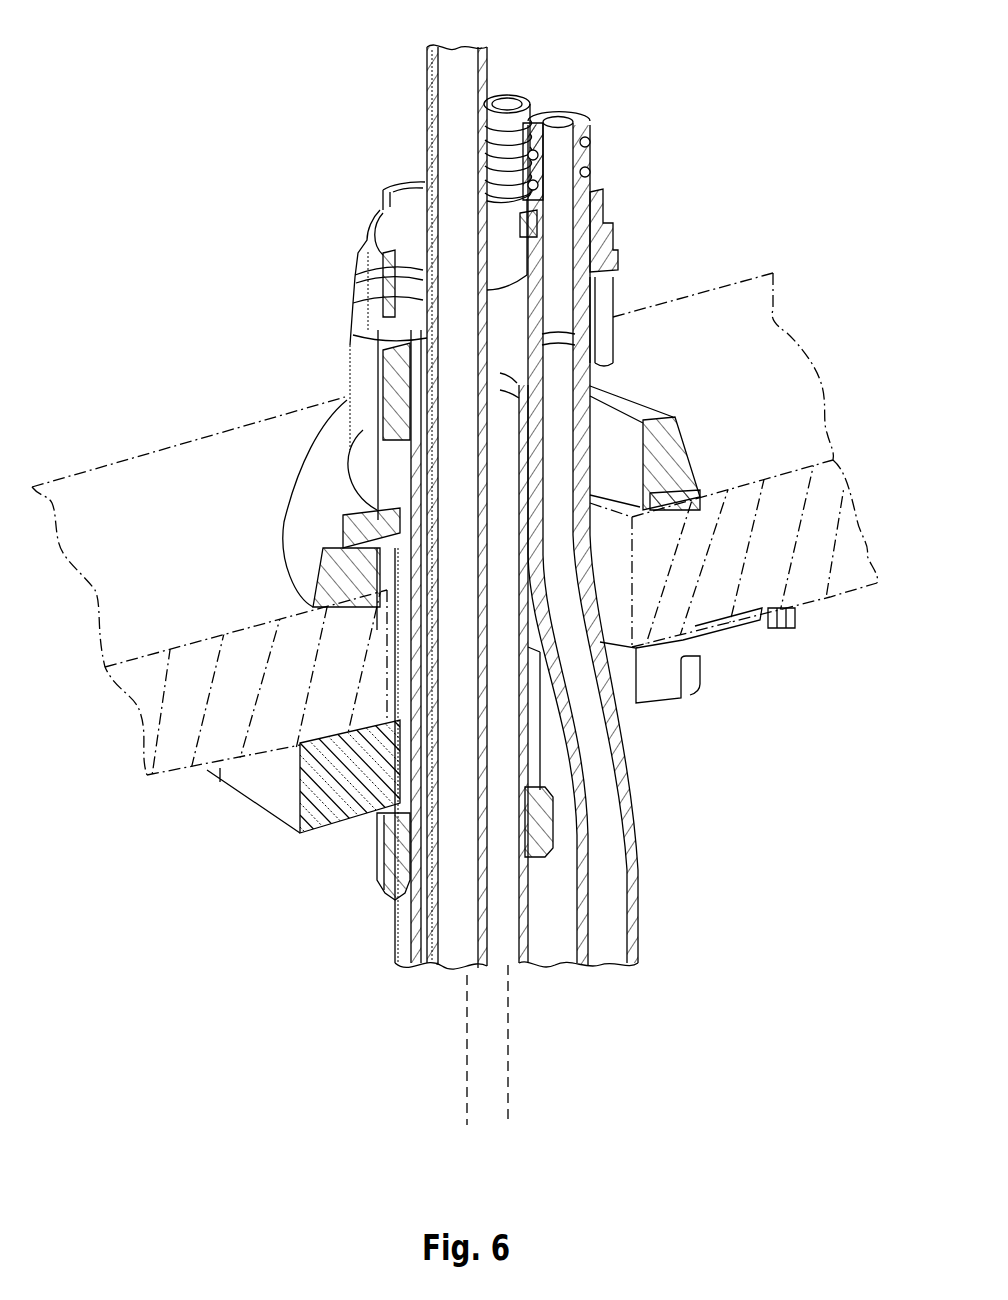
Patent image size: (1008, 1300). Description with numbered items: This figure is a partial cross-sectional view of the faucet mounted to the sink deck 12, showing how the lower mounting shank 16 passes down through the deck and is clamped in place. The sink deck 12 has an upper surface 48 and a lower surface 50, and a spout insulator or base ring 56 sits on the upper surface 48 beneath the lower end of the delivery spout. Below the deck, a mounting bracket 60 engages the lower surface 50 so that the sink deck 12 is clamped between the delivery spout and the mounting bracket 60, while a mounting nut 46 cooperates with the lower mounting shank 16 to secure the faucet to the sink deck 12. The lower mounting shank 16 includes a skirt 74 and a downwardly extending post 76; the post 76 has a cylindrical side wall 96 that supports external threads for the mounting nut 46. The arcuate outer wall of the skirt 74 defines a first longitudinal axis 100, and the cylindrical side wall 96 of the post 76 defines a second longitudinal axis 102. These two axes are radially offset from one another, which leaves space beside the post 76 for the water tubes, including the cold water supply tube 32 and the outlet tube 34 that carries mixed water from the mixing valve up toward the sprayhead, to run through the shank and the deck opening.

The sink deck 12 is at (775, 315).
The lower mounting shank 16 is at (268, 923).
The cold water supply tube 32 is at (593, 153).
The outlet tube 34 is at (522, 108).
The mounting nut 46 is at (378, 848).
The upper surface 48 is at (723, 307).
The lower surface 50 is at (830, 597).
The base ring 56 is at (685, 462).
The mounting bracket 60 is at (265, 790).
The skirt 74 is at (340, 390).
The post 76 is at (398, 937).
The cylindrical side wall 96 is at (540, 947).
The first longitudinal axis 100 is at (508, 1100).
The second longitudinal axis 102 is at (467, 1105).